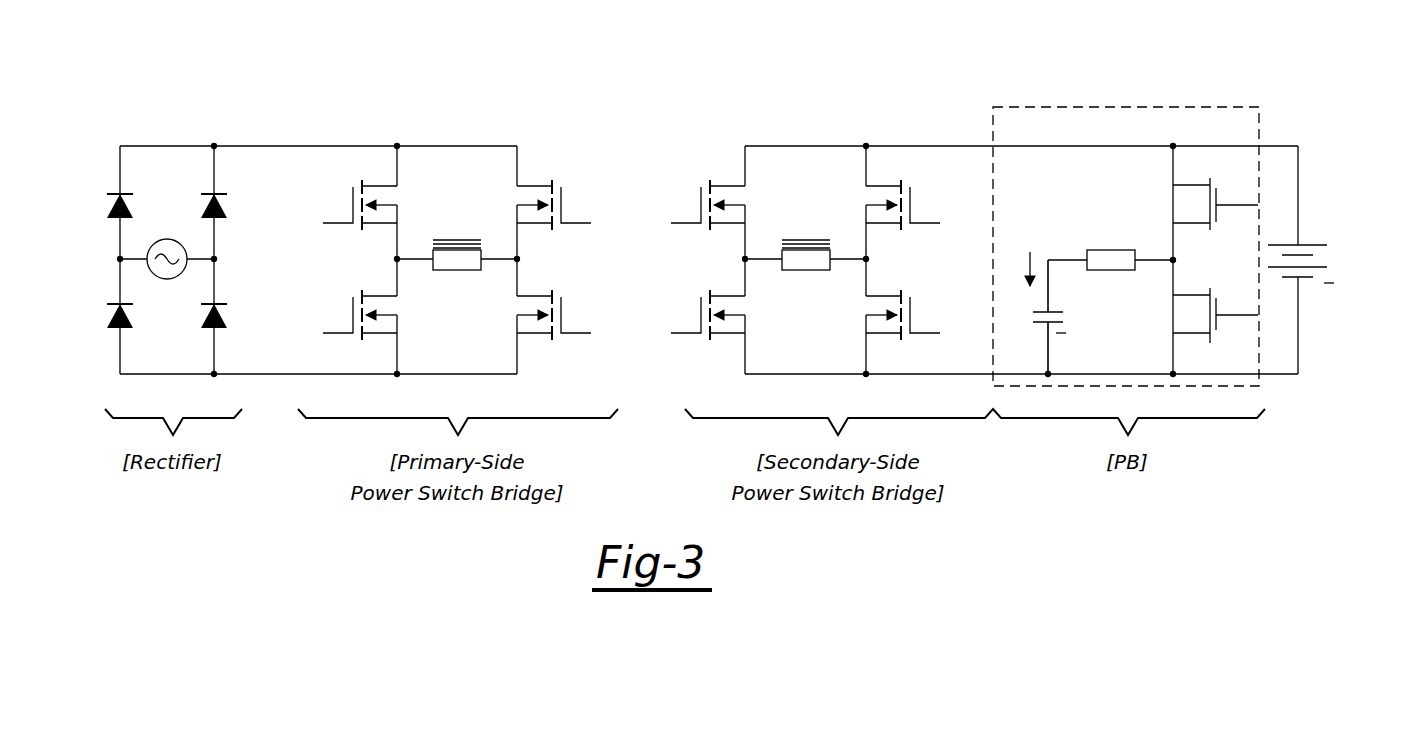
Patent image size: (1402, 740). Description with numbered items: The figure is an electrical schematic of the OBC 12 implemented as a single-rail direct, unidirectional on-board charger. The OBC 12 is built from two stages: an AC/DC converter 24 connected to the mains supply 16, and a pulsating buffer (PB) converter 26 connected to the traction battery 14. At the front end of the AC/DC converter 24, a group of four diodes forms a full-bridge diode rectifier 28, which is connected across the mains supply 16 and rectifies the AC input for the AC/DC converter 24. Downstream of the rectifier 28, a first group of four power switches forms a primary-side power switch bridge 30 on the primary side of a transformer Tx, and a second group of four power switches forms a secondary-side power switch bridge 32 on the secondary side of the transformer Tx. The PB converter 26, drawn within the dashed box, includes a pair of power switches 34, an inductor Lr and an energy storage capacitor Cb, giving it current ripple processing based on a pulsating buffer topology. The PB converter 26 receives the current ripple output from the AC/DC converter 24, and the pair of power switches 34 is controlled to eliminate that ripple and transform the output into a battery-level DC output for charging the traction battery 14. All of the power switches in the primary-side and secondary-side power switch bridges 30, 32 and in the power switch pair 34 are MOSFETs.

The on-board charger (OBC) 12 is at (1304, 46).
The traction battery 14 is at (1310, 242).
The mains supply 16 is at (167, 279).
The AC/DC converter 24 is at (453, 142).
The pulsating buffer (PB) converter 26 is at (1222, 142).
The full-bridge diode rectifier 28 is at (157, 183).
The primary-side power switch bridge 30 is at (447, 183).
The secondary-side power switch bridge 32 is at (795, 183).
The pair of power switches 34 is at (1223, 256).